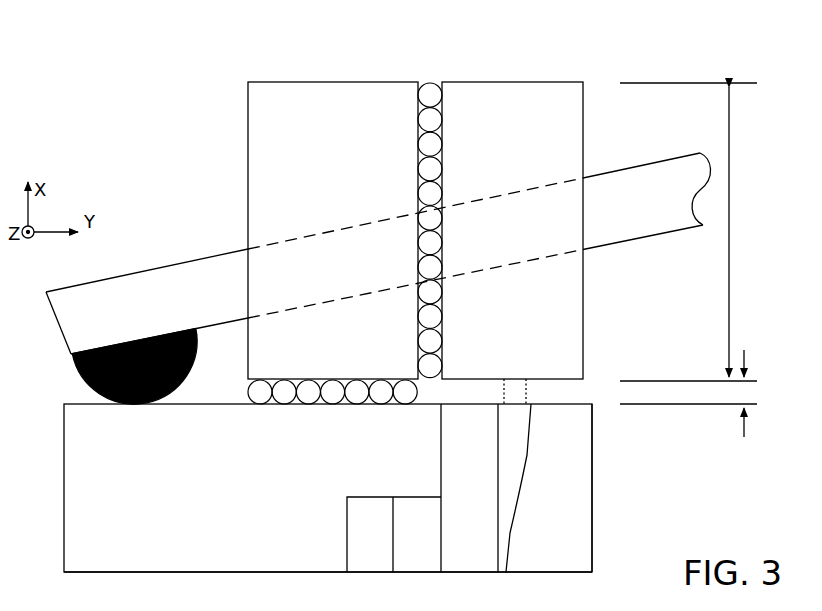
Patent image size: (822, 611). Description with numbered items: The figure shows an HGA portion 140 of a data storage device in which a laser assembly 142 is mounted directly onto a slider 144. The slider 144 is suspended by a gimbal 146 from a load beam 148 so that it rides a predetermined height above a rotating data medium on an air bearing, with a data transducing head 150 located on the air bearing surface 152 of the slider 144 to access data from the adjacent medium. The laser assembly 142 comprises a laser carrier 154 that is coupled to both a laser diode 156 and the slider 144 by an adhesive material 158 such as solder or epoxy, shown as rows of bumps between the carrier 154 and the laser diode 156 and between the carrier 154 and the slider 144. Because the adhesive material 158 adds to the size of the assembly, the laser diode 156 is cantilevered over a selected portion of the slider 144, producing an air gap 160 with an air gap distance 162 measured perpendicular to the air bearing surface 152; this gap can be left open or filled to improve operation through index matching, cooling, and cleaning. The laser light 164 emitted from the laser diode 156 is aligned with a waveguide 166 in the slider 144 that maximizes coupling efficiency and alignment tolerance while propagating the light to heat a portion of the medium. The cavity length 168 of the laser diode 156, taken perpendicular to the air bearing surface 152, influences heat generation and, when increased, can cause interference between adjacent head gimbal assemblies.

The HGA portion 140 is at (157, 49).
The laser assembly 142 is at (230, 124).
The slider 144 is at (328, 488).
The gimbal 146 is at (84, 383).
The load beam 148 is at (378, 253).
The data transducing head 150 is at (393, 574).
The air bearing surface 152 is at (78, 574).
The laser carrier 154 is at (333, 230).
The laser diode 156 is at (512, 230).
The adhesive material 158 is at (430, 76).
The air gap 160 is at (588, 382).
The air gap distance 162 is at (705, 393).
The laser light 164 is at (540, 390).
The waveguide 166 is at (572, 488).
The cavity length 168 is at (698, 230).